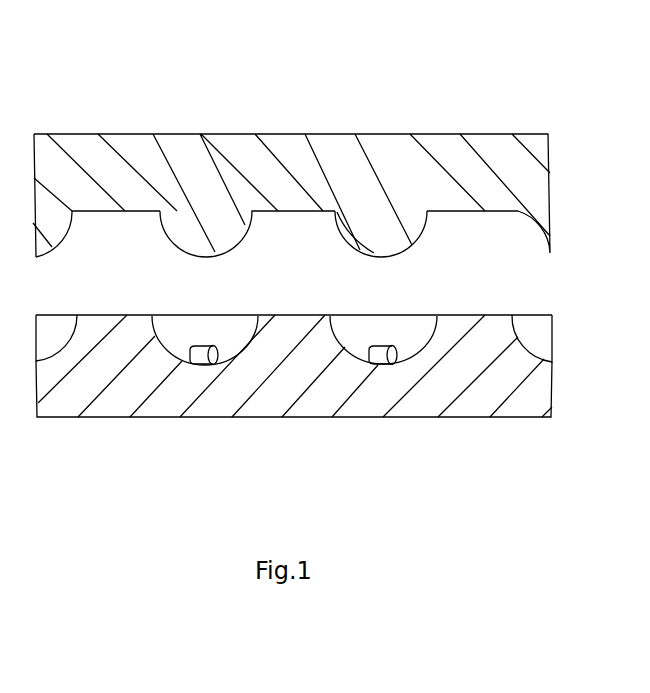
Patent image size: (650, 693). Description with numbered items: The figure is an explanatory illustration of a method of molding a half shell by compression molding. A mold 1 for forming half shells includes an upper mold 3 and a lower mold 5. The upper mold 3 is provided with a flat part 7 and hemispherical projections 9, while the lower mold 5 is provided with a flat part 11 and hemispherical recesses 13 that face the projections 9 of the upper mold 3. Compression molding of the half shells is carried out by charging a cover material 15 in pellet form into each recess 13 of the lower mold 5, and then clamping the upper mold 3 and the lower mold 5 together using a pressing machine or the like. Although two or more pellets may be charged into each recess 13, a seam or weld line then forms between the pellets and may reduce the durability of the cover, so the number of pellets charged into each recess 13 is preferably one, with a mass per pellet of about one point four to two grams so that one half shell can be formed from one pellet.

The mold 1 is at (526, 86).
The upper mold 3 is at (241, 150).
The lower mold 5 is at (263, 404).
The flat part 7 is at (102, 213).
The hemispherical projections 9 is at (385, 236).
The flat part 11 is at (467, 316).
The hemispherical recesses 13 is at (168, 342).
The cover material 15 is at (377, 343).